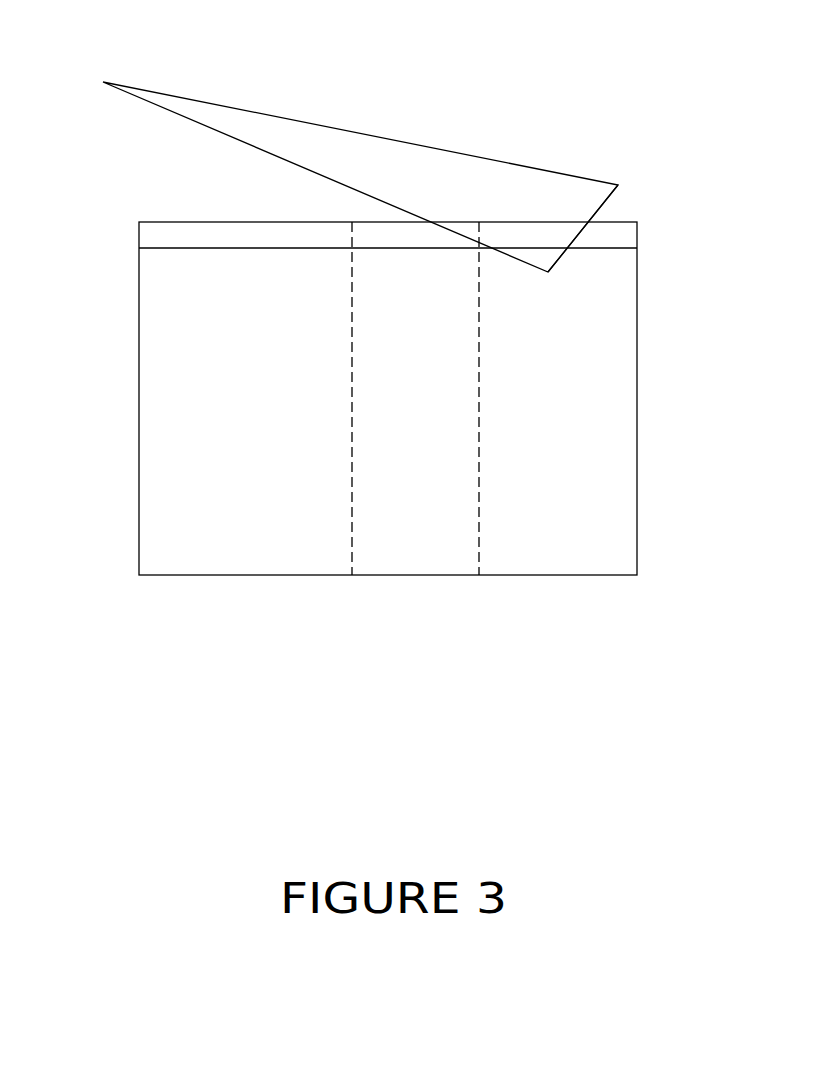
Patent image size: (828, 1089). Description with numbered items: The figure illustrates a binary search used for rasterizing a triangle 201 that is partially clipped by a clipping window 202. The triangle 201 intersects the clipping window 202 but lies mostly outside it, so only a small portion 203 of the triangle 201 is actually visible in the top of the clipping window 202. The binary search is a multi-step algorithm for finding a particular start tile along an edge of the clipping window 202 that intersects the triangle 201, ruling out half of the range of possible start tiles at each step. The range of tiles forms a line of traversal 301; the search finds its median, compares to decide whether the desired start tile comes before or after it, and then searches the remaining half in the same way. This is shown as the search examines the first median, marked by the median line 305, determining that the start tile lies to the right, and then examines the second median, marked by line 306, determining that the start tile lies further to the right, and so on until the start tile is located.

The triangle 201 is at (318, 123).
The clipping window 202 is at (139, 434).
The small portion 203 is at (558, 262).
The line of traversal 301 is at (139, 238).
The median line 305 is at (353, 575).
The line 306 is at (479, 575).